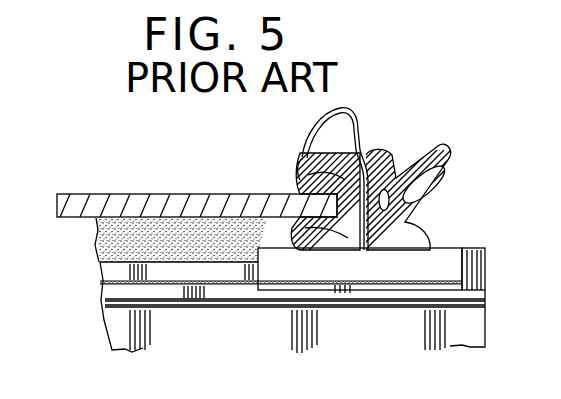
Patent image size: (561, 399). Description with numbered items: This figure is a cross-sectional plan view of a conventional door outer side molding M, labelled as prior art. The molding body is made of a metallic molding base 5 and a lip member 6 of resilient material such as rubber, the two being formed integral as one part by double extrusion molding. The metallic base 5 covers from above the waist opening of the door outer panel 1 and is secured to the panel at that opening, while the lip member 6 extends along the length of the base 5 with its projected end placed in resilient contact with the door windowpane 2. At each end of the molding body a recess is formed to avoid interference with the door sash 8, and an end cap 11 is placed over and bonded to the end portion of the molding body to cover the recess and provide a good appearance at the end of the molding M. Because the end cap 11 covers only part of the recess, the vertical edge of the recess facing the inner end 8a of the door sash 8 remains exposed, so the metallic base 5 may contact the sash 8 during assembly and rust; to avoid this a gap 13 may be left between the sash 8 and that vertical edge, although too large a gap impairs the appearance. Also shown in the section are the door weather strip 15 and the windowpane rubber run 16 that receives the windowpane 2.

The door outer panel 1 is at (478, 272).
The door windowpane 2 is at (122, 206).
The metallic molding base 5 is at (217, 272).
The lip member 6 is at (105, 241).
The door sash 8 is at (358, 136).
The inner end of the door sash 8a is at (303, 237).
The end cap 11 is at (395, 272).
The gap 13 is at (278, 222).
The door weather strip 15 is at (448, 163).
The windowpane rubber run 16 is at (297, 173).
The door outer side molding M is at (95, 281).